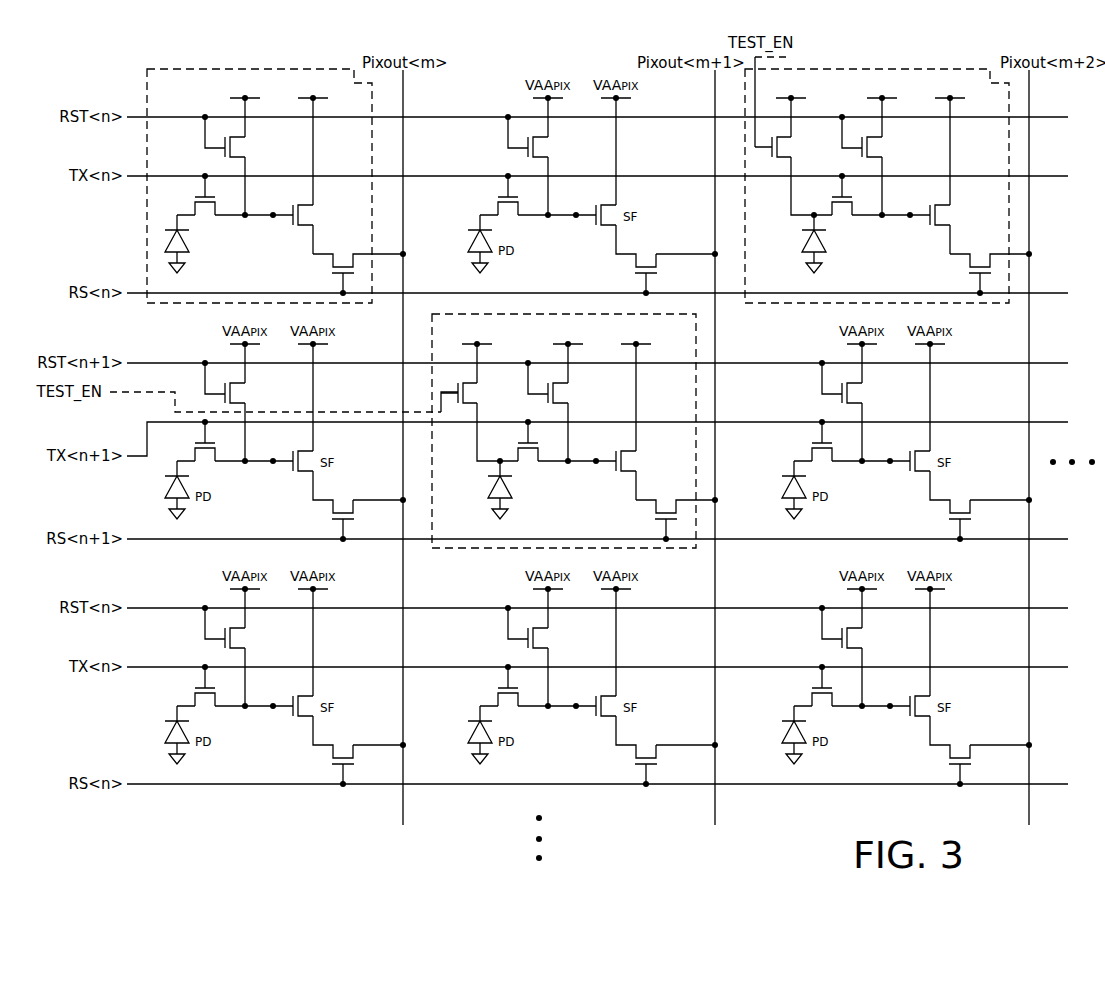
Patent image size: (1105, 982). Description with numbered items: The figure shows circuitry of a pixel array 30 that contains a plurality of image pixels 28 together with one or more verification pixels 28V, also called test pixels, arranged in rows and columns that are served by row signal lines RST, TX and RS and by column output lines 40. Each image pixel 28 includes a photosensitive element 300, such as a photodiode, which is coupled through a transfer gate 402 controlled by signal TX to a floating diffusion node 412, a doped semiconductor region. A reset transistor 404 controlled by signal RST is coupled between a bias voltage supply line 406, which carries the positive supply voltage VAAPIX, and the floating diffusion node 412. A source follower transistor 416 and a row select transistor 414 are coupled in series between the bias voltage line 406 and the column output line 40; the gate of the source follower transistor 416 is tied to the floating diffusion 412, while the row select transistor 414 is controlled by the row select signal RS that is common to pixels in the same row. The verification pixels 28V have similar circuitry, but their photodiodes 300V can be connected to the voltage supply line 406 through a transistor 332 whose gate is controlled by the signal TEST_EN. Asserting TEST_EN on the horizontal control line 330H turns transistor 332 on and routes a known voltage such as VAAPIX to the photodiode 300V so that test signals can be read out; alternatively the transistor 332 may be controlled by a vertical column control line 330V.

The pixel array 30 is at (80, 51).
The image pixel 28 is at (147, 224).
The verification pixel 28V is at (942, 68).
The column output line 40 is at (405, 97).
The photosensitive element 300 is at (165, 240).
The photodiode of verification pixel 300V is at (824, 242).
The transfer gate 402 is at (204, 214).
The reset transistor 404 is at (270, 145).
The bias voltage supply line 406 is at (242, 107).
The floating diffusion node 412 is at (274, 213).
The row select transistor 414 is at (330, 266).
The source follower transistor 416 is at (304, 237).
The vertical control line 330V is at (790, 57).
The horizontal control line 330H is at (125, 396).
The transistor 332 is at (789, 146).